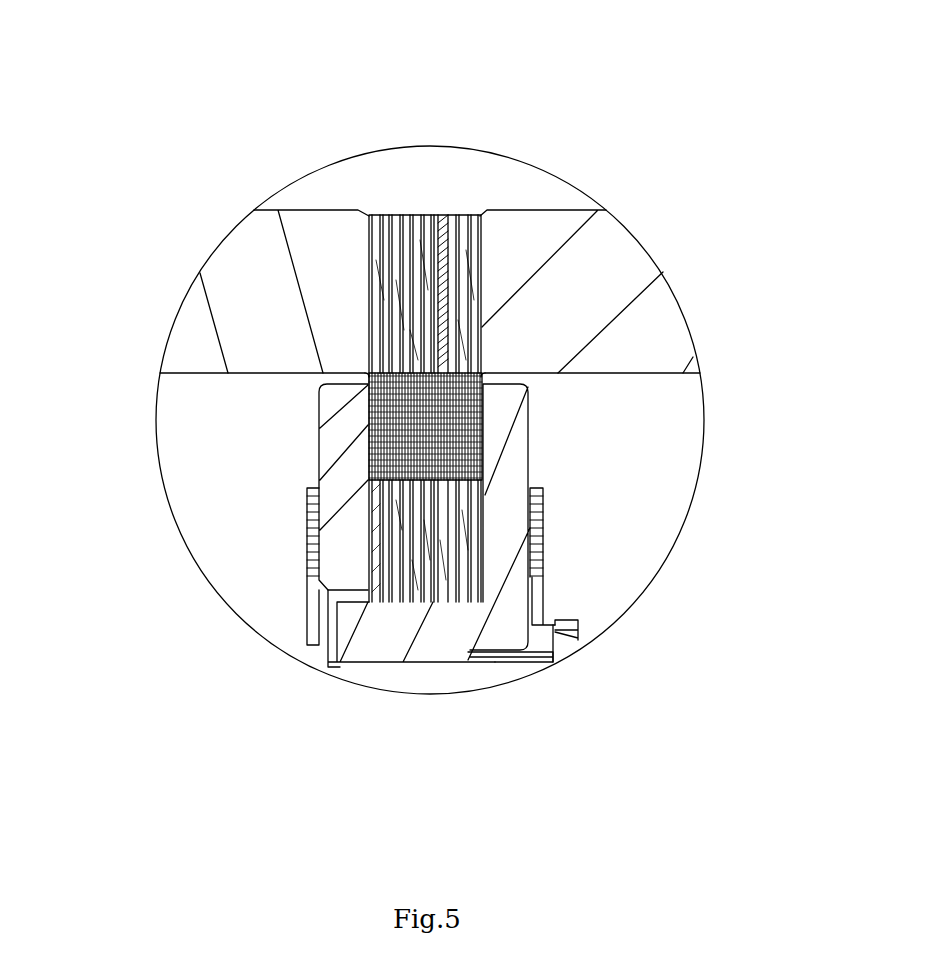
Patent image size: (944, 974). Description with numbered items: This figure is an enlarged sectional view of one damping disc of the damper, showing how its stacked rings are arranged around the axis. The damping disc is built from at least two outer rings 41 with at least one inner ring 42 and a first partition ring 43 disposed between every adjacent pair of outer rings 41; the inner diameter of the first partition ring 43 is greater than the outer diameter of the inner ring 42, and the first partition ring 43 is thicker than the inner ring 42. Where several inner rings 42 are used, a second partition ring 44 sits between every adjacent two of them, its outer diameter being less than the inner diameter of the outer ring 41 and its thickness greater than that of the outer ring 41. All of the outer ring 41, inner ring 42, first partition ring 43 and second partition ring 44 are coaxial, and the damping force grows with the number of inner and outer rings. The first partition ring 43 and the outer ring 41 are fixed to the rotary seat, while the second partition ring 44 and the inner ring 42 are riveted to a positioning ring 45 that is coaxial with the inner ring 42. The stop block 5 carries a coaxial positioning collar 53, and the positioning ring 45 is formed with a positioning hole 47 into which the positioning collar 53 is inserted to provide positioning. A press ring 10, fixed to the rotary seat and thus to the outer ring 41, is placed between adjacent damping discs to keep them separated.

The stop block 5 is at (535, 665).
The press ring 10 is at (557, 312).
The outer ring 41 is at (368, 282).
The inner ring 42 is at (372, 420).
The first partition ring 43 is at (380, 260).
The second partition ring 44 is at (368, 523).
The positioning ring 45 is at (503, 505).
The positioning hole 47 is at (410, 662).
The positioning collar 53 is at (453, 677).